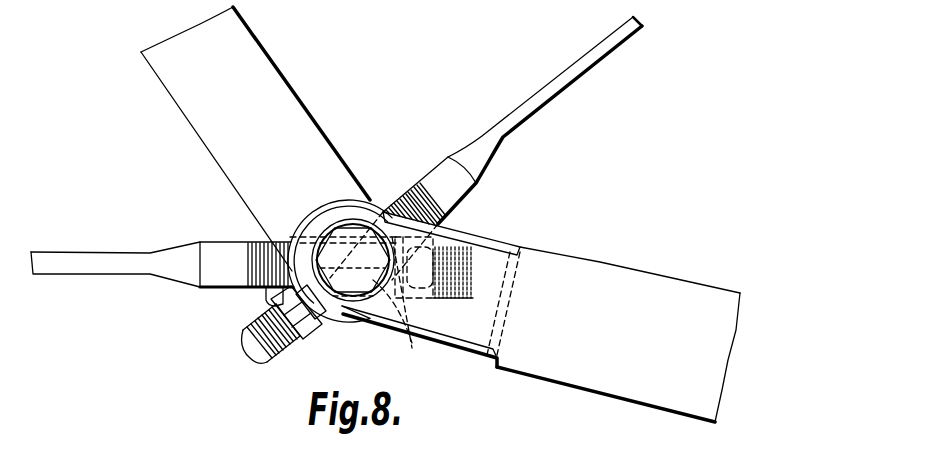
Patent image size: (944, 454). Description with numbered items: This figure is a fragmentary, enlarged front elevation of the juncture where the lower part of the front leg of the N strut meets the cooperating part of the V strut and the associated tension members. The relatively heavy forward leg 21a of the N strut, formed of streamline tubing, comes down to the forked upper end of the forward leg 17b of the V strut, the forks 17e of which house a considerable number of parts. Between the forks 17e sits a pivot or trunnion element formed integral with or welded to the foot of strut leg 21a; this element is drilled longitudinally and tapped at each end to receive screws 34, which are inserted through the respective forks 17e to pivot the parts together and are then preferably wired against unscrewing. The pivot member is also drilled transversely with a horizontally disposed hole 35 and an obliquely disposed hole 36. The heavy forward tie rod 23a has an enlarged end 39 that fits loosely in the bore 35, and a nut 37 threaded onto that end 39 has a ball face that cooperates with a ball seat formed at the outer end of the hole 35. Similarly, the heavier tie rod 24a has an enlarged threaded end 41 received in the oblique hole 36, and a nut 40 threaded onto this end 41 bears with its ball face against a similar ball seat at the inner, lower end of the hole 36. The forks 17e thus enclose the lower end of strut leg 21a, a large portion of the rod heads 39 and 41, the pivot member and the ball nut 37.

The forward leg of N strut 21a is at (255, 139).
The tie rod 24a is at (549, 90).
The forward rod 23a is at (108, 277).
The forward leg of V strut 17b is at (541, 334).
The forks 17e is at (484, 247).
The screws 34 is at (348, 326).
The obliquely disposed hole 36 is at (364, 240).
The enlarged threaded end of tie rod 41 is at (249, 358).
The nut 40 is at (316, 330).
The enlarged end of rod 39 is at (246, 290).
The horizontally disposed hole 35 is at (412, 350).
The nut 37 is at (418, 245).